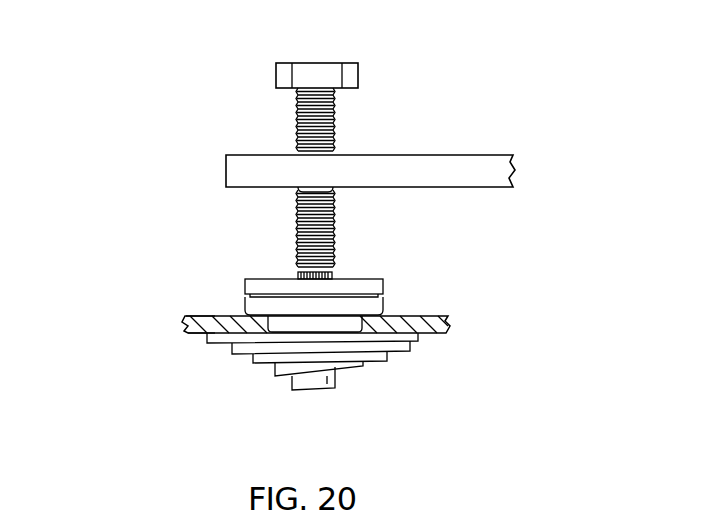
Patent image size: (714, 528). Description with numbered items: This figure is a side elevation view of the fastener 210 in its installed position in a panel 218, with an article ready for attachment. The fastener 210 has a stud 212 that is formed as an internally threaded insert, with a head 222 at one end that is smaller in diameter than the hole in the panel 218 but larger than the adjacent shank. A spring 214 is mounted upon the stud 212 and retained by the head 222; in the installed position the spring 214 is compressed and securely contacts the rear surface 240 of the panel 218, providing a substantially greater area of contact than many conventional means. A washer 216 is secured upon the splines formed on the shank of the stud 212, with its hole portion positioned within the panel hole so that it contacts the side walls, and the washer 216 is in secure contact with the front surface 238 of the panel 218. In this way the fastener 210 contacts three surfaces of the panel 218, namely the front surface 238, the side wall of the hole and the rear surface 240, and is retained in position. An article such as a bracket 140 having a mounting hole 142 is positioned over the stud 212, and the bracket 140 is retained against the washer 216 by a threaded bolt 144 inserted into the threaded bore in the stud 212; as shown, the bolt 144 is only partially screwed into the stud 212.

The bracket 140 is at (447, 156).
The mounting hole 142 is at (336, 155).
The threaded bolt 144 is at (323, 62).
The fastener 210 is at (220, 287).
The stud 212 is at (326, 391).
The spring 214 is at (243, 350).
The washer 216 is at (383, 305).
The panel 218 is at (185, 325).
The head 222 is at (327, 380).
The front surface 238 is at (195, 316).
The rear surface 240 is at (190, 333).